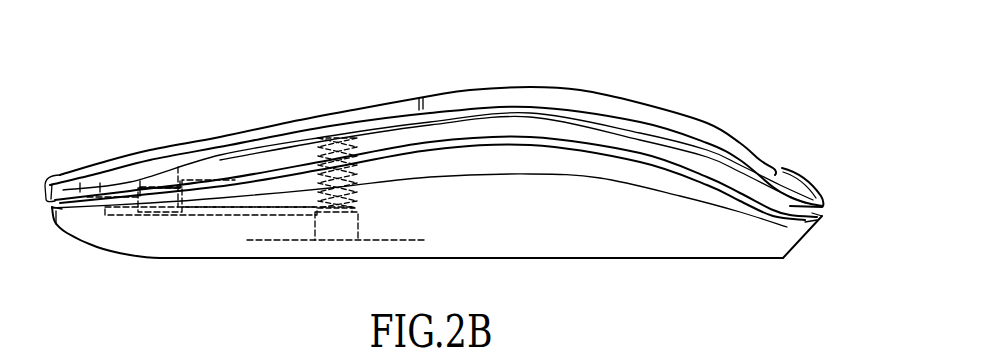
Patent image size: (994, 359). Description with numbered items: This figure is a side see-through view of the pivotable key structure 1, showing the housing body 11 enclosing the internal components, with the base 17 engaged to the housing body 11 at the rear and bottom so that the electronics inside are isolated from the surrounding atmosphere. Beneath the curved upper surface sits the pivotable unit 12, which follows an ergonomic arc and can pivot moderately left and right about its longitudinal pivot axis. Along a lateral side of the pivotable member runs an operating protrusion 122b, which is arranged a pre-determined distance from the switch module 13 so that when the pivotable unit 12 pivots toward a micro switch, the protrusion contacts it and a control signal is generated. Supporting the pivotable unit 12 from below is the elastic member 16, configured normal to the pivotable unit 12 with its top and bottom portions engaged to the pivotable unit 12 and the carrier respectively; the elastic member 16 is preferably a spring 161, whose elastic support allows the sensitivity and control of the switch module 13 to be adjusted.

The pivotable key structure 1 is at (138, 37).
The housing body 11 is at (795, 180).
The pivotable unit 12 is at (350, 118).
The operating protrusion 122b is at (155, 161).
The switch module 13 is at (158, 197).
The elastic member 16 is at (447, 183).
The spring 161 is at (355, 193).
The base 17 is at (785, 228).